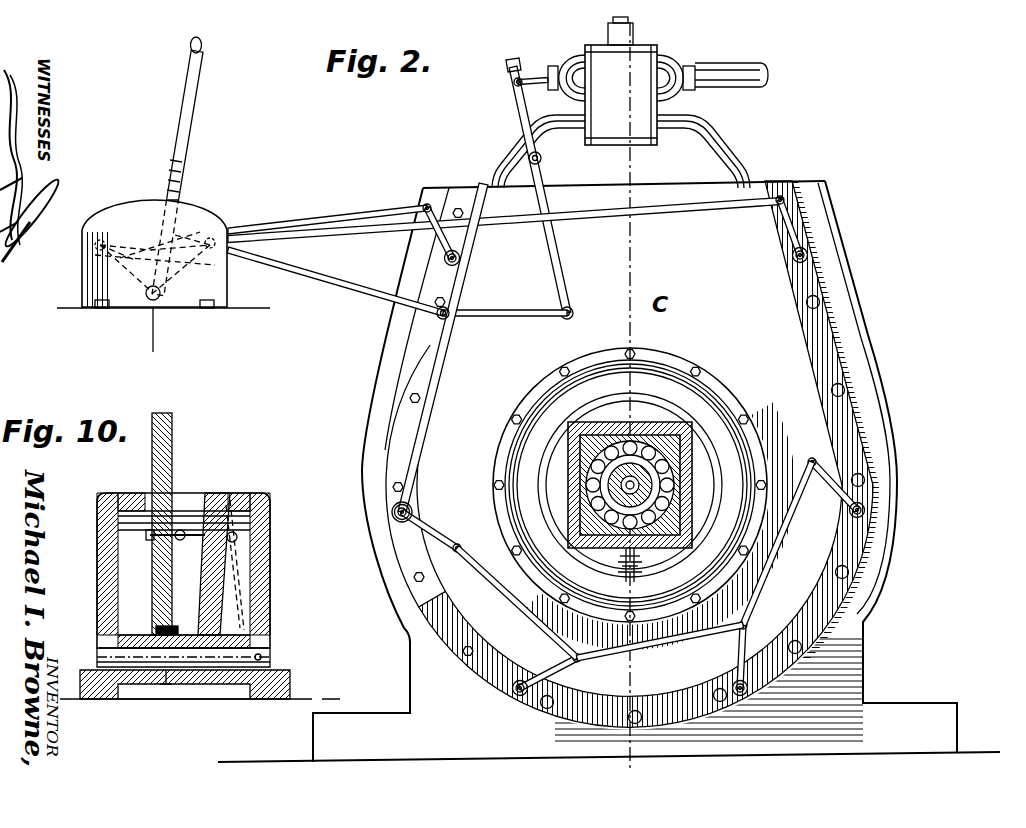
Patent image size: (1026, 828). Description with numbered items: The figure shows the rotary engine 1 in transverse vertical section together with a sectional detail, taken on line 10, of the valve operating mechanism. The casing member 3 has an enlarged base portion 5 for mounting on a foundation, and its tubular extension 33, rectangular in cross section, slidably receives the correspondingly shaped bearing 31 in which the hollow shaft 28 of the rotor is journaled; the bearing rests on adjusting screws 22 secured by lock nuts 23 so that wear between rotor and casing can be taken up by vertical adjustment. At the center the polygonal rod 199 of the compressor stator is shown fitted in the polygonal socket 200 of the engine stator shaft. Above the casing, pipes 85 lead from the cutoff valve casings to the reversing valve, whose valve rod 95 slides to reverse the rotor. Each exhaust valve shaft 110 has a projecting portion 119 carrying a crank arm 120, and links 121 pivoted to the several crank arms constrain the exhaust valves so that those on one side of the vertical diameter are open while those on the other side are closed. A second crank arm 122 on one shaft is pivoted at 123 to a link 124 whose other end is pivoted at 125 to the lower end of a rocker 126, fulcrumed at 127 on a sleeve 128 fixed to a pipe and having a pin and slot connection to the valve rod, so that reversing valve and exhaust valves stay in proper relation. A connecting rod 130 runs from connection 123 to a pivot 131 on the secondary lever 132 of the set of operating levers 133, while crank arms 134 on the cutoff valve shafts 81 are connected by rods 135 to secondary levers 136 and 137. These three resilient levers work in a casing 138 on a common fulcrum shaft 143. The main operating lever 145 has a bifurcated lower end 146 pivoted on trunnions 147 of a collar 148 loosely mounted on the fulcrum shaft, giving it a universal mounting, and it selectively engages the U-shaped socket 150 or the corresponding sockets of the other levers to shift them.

In FIG. 2, the engine 1 is at (885, 341).
In FIG. 2, the casing member 3 is at (912, 522).
In FIG. 2, the enlarged base portion 5 is at (874, 712).
In FIG. 2, the section line 10 is at (164, 175).
In FIG. 2, the adjusting screws 22 is at (628, 566).
In FIG. 2, the lock nuts 23 is at (620, 562).
In FIG. 2, the hollow shaft 28 is at (655, 422).
In FIG. 2, the bearing 31 is at (604, 445).
In FIG. 2, the tubular extension 33 is at (688, 432).
In FIG. 2, the shafts 81 is at (460, 258).
In FIG. 2, the pipes 85 is at (554, 138).
In FIG. 2, the valve rod 95 is at (522, 80).
In FIG. 2, the shaft 110 is at (394, 512).
In FIG. 2, the projecting portion 119 is at (410, 508).
In FIG. 2, the crank arm 120 is at (440, 526).
In FIG. 2, the links 121 is at (504, 612).
In FIG. 2, the second crank arm 122 is at (432, 420).
In FIG. 2, the pivotal connection 123 is at (450, 320).
In FIG. 2, the link 124 is at (512, 311).
In FIG. 2, the pivotal connection 125 is at (575, 306).
In FIG. 2, the rocker 126 is at (557, 250).
In FIG. 2, the fulcrum 127 is at (512, 62).
In FIG. 2, the sleeve 128 is at (545, 162).
In FIG. 2, the connecting rod 130 is at (344, 280).
In FIG. 2, the pivotal connection 131 is at (226, 284).
In FIG. 10, the pivotal connection 131 is at (182, 528).
In FIG. 2, the secondary lever 132 is at (200, 310).
In FIG. 2, the set of operating levers 133 is at (82, 262).
In FIG. 2, the crank arms 134 is at (440, 190).
In FIG. 2, the rods 135 is at (348, 216).
In FIG. 2, the secondary lever 136 is at (88, 238).
In FIG. 2, the secondary lever 137 is at (210, 224).
In FIG. 10, the secondary lever 137 is at (238, 532).
In FIG. 10, the casing 138 is at (264, 576).
In FIG. 2, the fulcrum shaft 143 is at (148, 302).
In FIG. 10, the fulcrum shaft 143 is at (97, 652).
In FIG. 2, the main operating lever 145 is at (188, 118).
In FIG. 10, the main operating lever 145 is at (170, 444).
In FIG. 10, the bifurcated lower end 146 is at (178, 628).
In FIG. 10, the trunnions 147 is at (182, 688).
In FIG. 10, the collar 148 is at (166, 688).
In FIG. 10, the U-shaped socket 150 is at (256, 543).
In FIG. 2, the rod 199 is at (640, 482).
In FIG. 2, the polygonal socket 200 is at (600, 474).